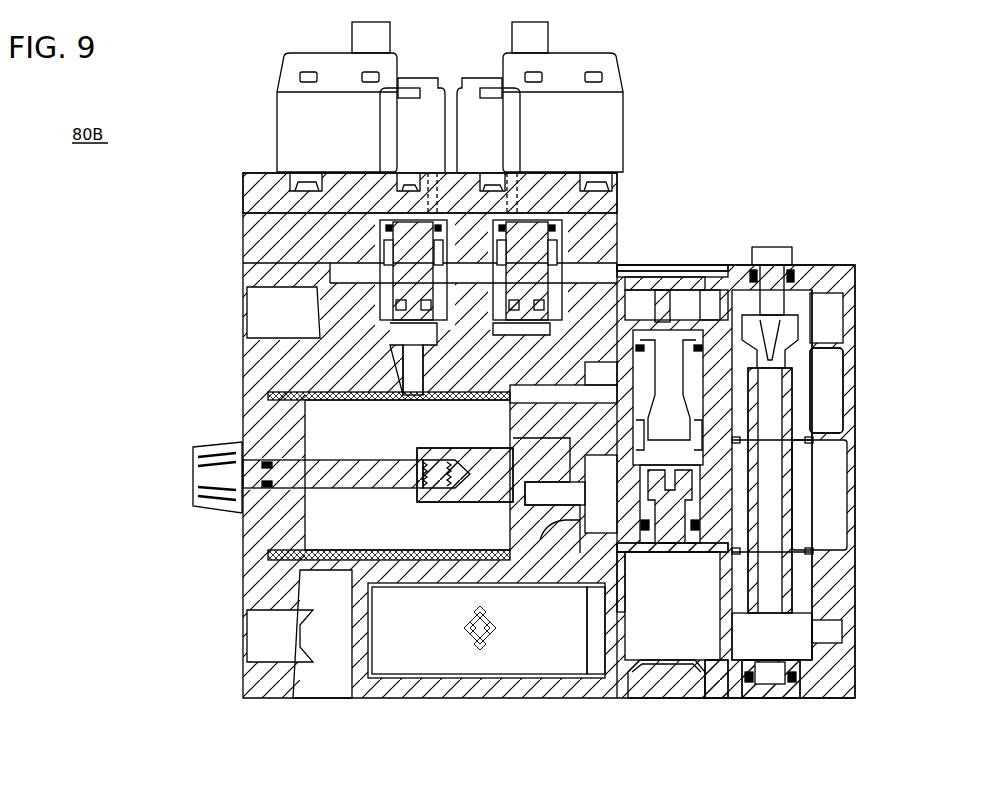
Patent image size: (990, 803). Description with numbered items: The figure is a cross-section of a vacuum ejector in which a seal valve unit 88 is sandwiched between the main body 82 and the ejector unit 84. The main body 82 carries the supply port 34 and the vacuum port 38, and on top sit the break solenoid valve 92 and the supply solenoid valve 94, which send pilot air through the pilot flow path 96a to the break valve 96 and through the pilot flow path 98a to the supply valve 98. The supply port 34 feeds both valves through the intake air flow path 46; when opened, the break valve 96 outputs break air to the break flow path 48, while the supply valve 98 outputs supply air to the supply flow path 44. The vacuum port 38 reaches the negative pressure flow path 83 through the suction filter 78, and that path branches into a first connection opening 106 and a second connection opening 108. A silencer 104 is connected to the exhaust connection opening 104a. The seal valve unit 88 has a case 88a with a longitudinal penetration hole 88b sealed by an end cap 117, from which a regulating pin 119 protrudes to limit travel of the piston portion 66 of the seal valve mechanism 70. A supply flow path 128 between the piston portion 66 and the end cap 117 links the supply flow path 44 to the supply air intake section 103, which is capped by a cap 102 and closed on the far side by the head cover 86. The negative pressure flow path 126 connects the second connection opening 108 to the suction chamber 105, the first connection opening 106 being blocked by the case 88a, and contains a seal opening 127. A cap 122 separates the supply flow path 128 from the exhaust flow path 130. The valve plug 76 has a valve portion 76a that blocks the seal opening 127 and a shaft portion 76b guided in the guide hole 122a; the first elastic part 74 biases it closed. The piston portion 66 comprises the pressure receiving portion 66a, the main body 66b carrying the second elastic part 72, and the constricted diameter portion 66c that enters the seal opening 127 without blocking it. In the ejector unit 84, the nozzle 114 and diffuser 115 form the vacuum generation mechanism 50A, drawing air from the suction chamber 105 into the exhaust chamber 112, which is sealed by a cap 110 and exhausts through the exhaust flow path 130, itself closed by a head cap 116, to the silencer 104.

The main body 82 is at (250, 170).
The supply flow path 44 is at (585, 205).
The ejector unit 84 is at (812, 265).
The head cover 86 is at (838, 602).
The break solenoid valve 92 is at (333, 52).
The supply solenoid valve 94 is at (570, 52).
The break valve 96 is at (365, 230).
The pilot flow path 96a is at (406, 182).
The supply valve 98 is at (548, 230).
The pilot flow path 98a is at (486, 182).
The intake air flow path 46 is at (372, 300).
The break flow path 48 is at (413, 398).
The supply port 34 is at (262, 318).
The vacuum port 38 is at (258, 636).
The suction filter 78 is at (352, 402).
The negative pressure flow path 83 is at (510, 500).
The seal valve mechanism 70 is at (585, 422).
The first connection opening 106 is at (600, 445).
The second connection opening 108 is at (540, 530).
The first elastic part 74 is at (640, 500).
The piston portion 66 is at (633, 385).
The pressure receiving portion 66a is at (590, 366).
The main body 66b is at (640, 408).
The constricted diameter portion 66c is at (555, 493).
The silencer 104 is at (525, 676).
The exhaust connection opening 104a is at (600, 614).
The exhaust flow path 130 is at (610, 639).
The seal valve unit 88 is at (700, 265).
The case 88a is at (720, 685).
The penetration hole 88b is at (660, 266).
The supply flow path 128 is at (645, 300).
The regulating pin 119 is at (690, 283).
The end cap 117 is at (712, 290).
The cap 122 is at (692, 560).
The guide hole 122a is at (672, 548).
The shaft portion 76b is at (641, 565).
The head cap 116 is at (683, 675).
The cap 102 is at (768, 247).
The supply air intake section 103 is at (776, 285).
The nozzle 114 is at (790, 340).
The second elastic part 72 is at (800, 405).
The vacuum generation mechanism 50A is at (805, 378).
The diffuser 115 is at (820, 412).
The suction chamber 105 is at (818, 433).
The seal opening 127 is at (812, 440).
The negative pressure flow path 126 is at (800, 448).
The valve plug 76 is at (800, 460).
The valve portion 76a is at (805, 530).
The exhaust chamber 112 is at (795, 636).
The cap 110 is at (760, 695).